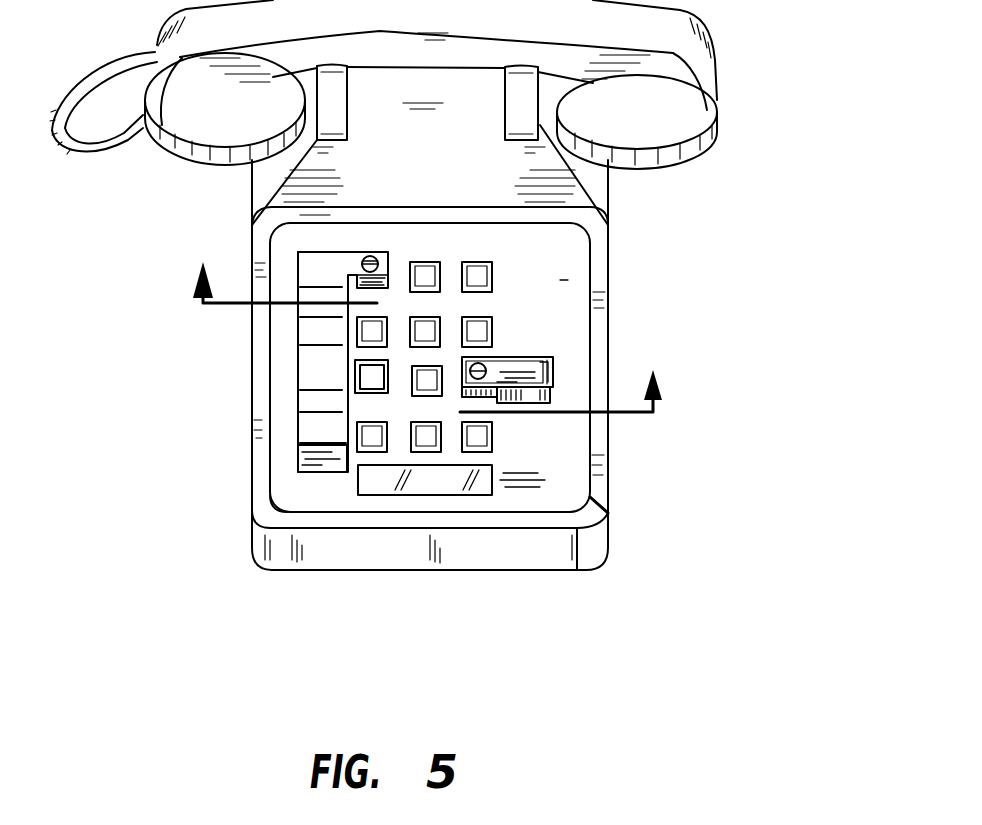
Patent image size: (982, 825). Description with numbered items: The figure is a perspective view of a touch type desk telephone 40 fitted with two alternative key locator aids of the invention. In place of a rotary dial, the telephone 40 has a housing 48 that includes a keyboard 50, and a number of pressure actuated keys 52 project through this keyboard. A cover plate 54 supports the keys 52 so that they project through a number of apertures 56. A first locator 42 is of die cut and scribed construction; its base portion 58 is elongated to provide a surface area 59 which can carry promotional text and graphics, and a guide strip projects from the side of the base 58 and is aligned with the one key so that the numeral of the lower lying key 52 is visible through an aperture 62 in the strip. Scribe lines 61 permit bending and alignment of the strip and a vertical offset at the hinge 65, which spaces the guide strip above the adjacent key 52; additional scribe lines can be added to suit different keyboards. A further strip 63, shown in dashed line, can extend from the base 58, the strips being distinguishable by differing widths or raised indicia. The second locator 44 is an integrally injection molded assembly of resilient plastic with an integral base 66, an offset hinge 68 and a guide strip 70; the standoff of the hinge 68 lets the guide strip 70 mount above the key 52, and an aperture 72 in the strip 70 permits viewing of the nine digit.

The touch type desk telephone 40 is at (780, 186).
The locator 42 is at (314, 257).
The locator 44 is at (560, 364).
The housing 48 is at (608, 457).
The keyboard 50 is at (600, 513).
The pressure actuated keys 52 is at (436, 262).
The cover plate 54 is at (567, 285).
The apertures 56 is at (440, 338).
The base portion 58 is at (268, 505).
The surface area 59 is at (318, 437).
The scribe lines 61 is at (315, 440).
The aperture 62 is at (371, 255).
The strip 63 is at (388, 380).
The hinge 65 is at (297, 388).
The base 66 is at (524, 402).
The offset hinge 68 is at (553, 387).
The guide strip 70 is at (536, 366).
The aperture 72 is at (481, 368).